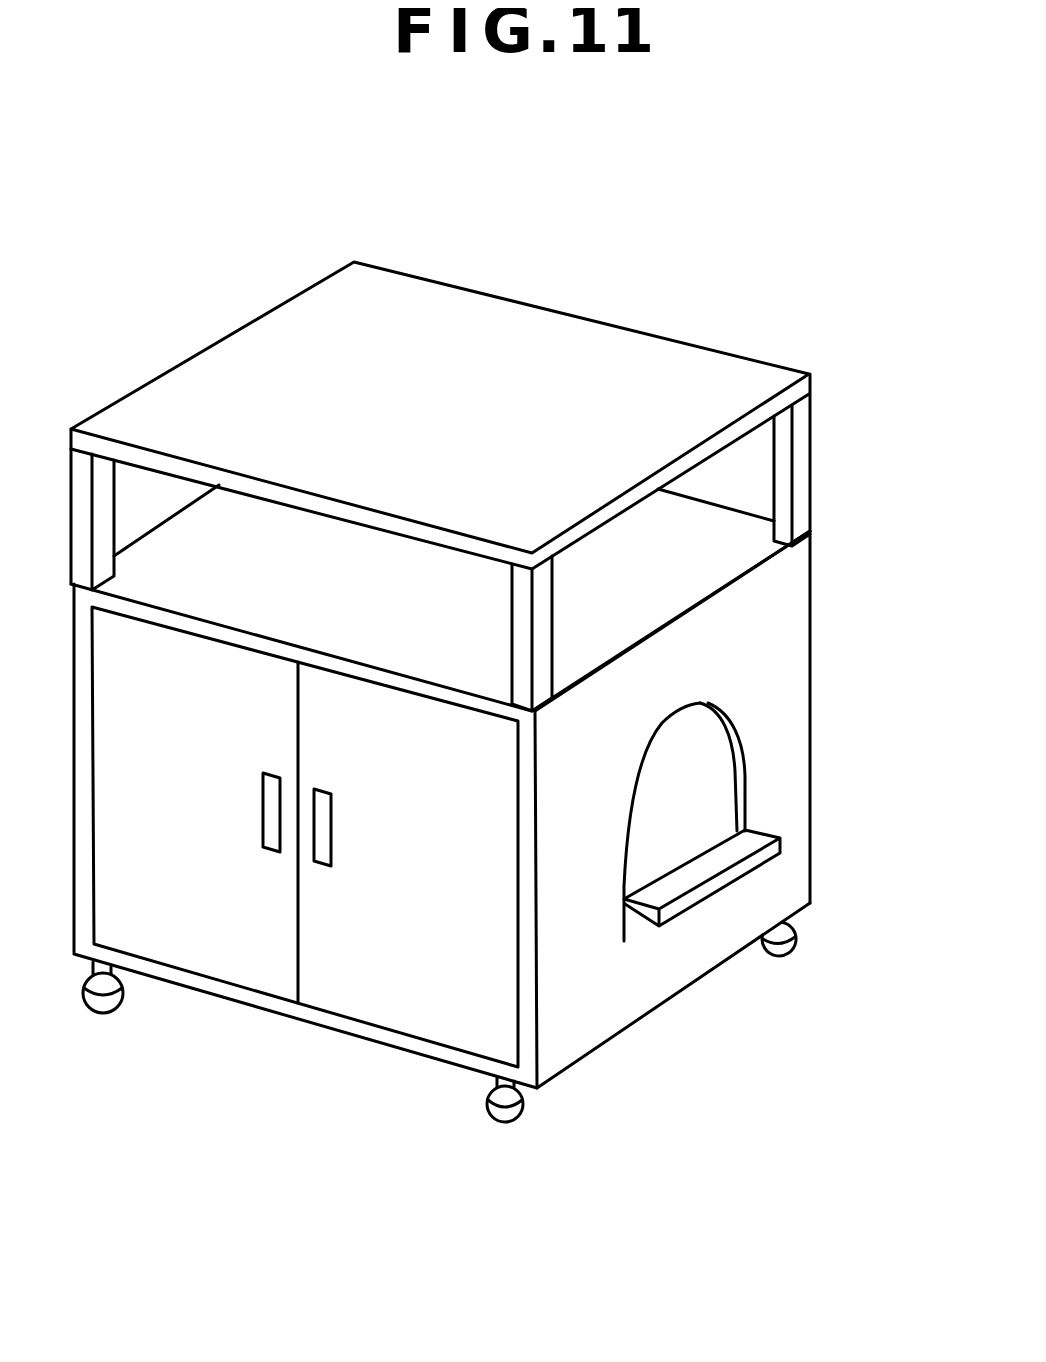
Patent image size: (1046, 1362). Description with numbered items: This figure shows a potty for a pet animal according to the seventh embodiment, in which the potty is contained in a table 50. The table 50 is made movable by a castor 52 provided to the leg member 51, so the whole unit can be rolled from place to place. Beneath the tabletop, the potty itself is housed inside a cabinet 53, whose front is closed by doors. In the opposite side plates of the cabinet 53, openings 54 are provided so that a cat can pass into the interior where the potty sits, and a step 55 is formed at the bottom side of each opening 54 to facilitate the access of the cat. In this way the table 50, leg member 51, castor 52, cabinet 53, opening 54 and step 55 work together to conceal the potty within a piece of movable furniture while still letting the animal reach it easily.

The table 50 is at (645, 310).
The leg member 51 is at (495, 1077).
The castor 52 is at (504, 1122).
The cabinet 53 is at (797, 601).
The opening 54 is at (737, 752).
The step 55 is at (703, 872).